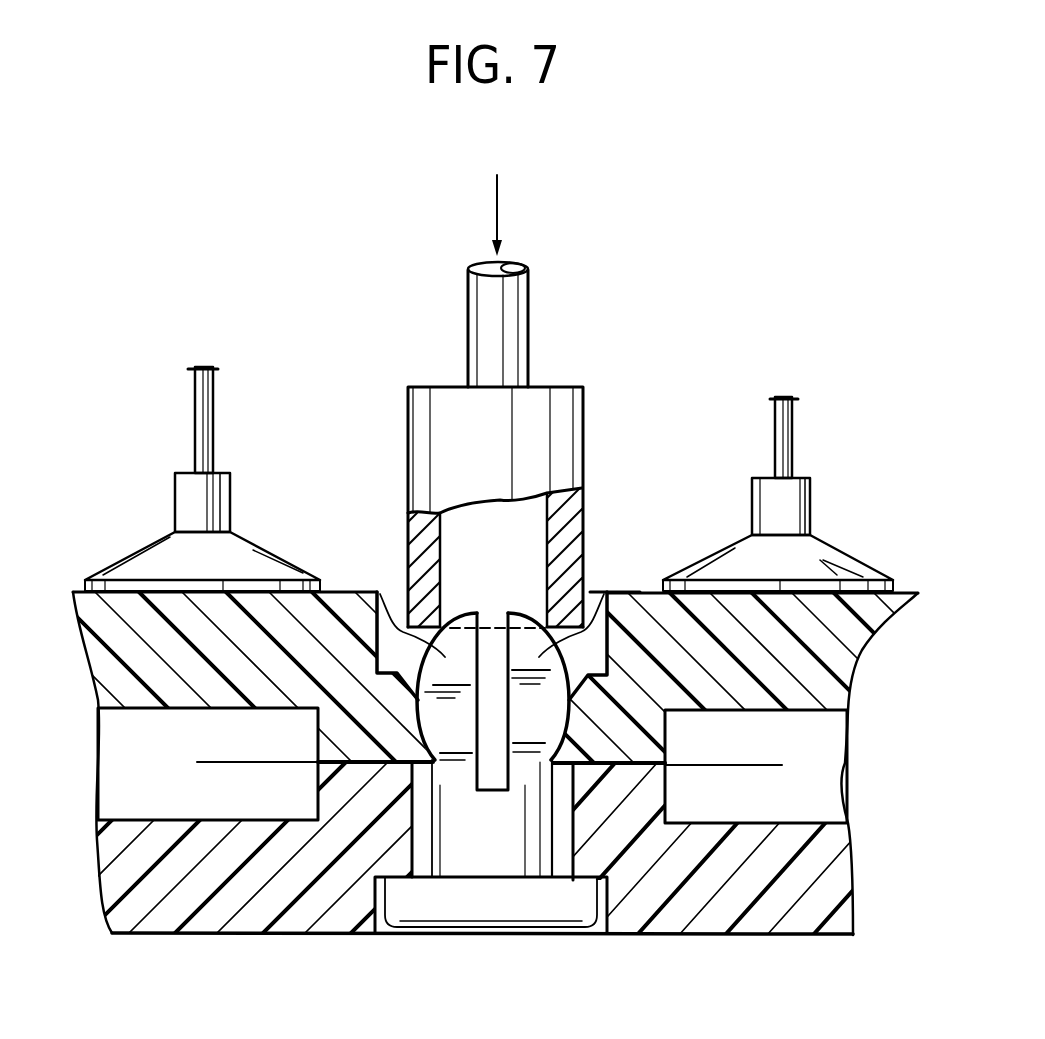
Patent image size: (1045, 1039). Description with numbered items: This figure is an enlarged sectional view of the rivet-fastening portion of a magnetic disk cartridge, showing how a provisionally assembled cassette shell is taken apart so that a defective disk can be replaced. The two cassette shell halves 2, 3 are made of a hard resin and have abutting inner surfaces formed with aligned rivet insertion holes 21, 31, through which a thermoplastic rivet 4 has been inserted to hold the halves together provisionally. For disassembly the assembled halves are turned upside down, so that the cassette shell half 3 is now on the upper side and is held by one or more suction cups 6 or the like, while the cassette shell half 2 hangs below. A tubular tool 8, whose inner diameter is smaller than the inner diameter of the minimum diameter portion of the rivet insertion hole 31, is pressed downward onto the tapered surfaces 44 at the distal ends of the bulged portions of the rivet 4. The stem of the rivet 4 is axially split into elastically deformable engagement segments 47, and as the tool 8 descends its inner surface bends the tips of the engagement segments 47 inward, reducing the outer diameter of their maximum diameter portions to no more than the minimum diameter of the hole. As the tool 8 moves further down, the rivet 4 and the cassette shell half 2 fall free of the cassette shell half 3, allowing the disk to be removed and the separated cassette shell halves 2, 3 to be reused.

The cassette shell half 2 is at (847, 882).
The cassette shell half 3 is at (868, 668).
The rivet 4 is at (518, 920).
The suction cup 6 is at (273, 557).
The tubular tool 8 is at (583, 455).
The rivet insertion hole 21 is at (422, 862).
The rivet insertion hole 31 is at (617, 592).
The tapered surface 44 is at (382, 602).
The engagement segment 47 is at (532, 657).